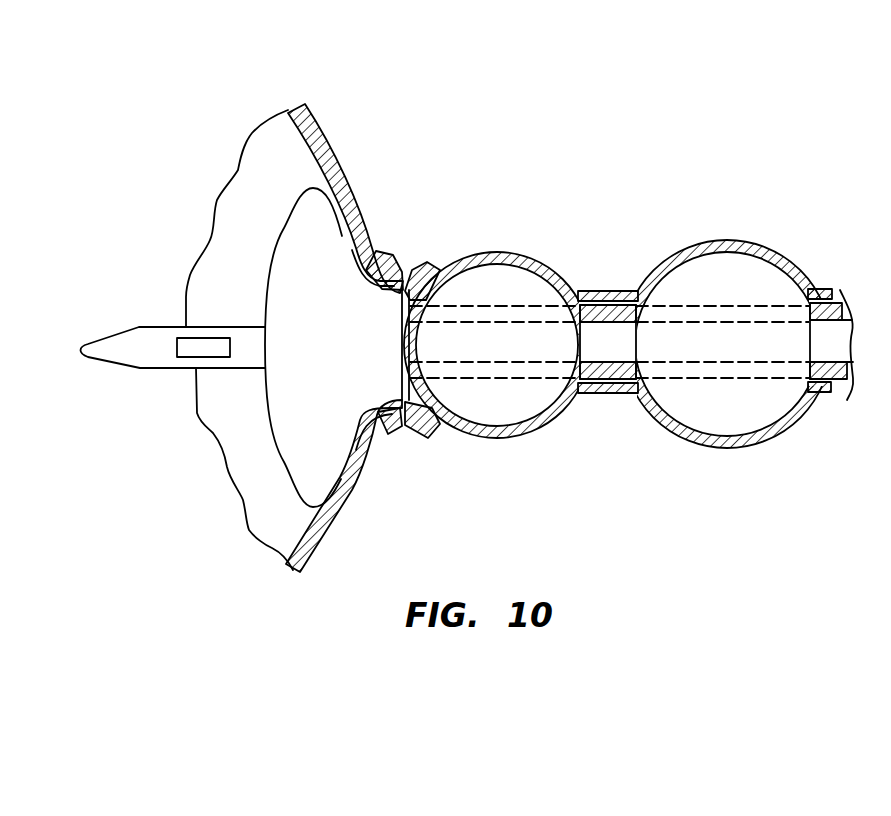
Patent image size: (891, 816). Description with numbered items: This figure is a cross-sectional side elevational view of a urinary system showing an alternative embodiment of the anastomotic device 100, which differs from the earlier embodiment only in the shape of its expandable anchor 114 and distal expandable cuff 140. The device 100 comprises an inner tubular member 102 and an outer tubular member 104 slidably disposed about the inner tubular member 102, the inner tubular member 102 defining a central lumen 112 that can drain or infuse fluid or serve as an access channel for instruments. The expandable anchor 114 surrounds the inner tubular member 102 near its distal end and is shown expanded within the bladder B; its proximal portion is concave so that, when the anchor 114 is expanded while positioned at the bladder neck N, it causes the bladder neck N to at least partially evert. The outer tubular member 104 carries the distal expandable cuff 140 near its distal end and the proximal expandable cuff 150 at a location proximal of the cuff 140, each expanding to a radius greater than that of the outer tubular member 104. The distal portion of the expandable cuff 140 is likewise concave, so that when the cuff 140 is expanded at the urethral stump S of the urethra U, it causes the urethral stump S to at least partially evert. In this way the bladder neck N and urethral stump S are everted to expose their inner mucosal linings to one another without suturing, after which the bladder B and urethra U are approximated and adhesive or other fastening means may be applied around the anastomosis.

The anastomotic device 100 is at (638, 172).
The inner tubular member 102 is at (244, 371).
The outer tubular member 104 is at (840, 296).
The central lumen 112 is at (834, 348).
The expandable anchor 114 is at (288, 234).
The distal expandable cuff 140 is at (555, 407).
The proximal expandable cuff 150 is at (712, 267).
The bladder B is at (316, 124).
The bladder neck N is at (383, 250).
The urethral stump S is at (427, 262).
The urethra U is at (612, 287).